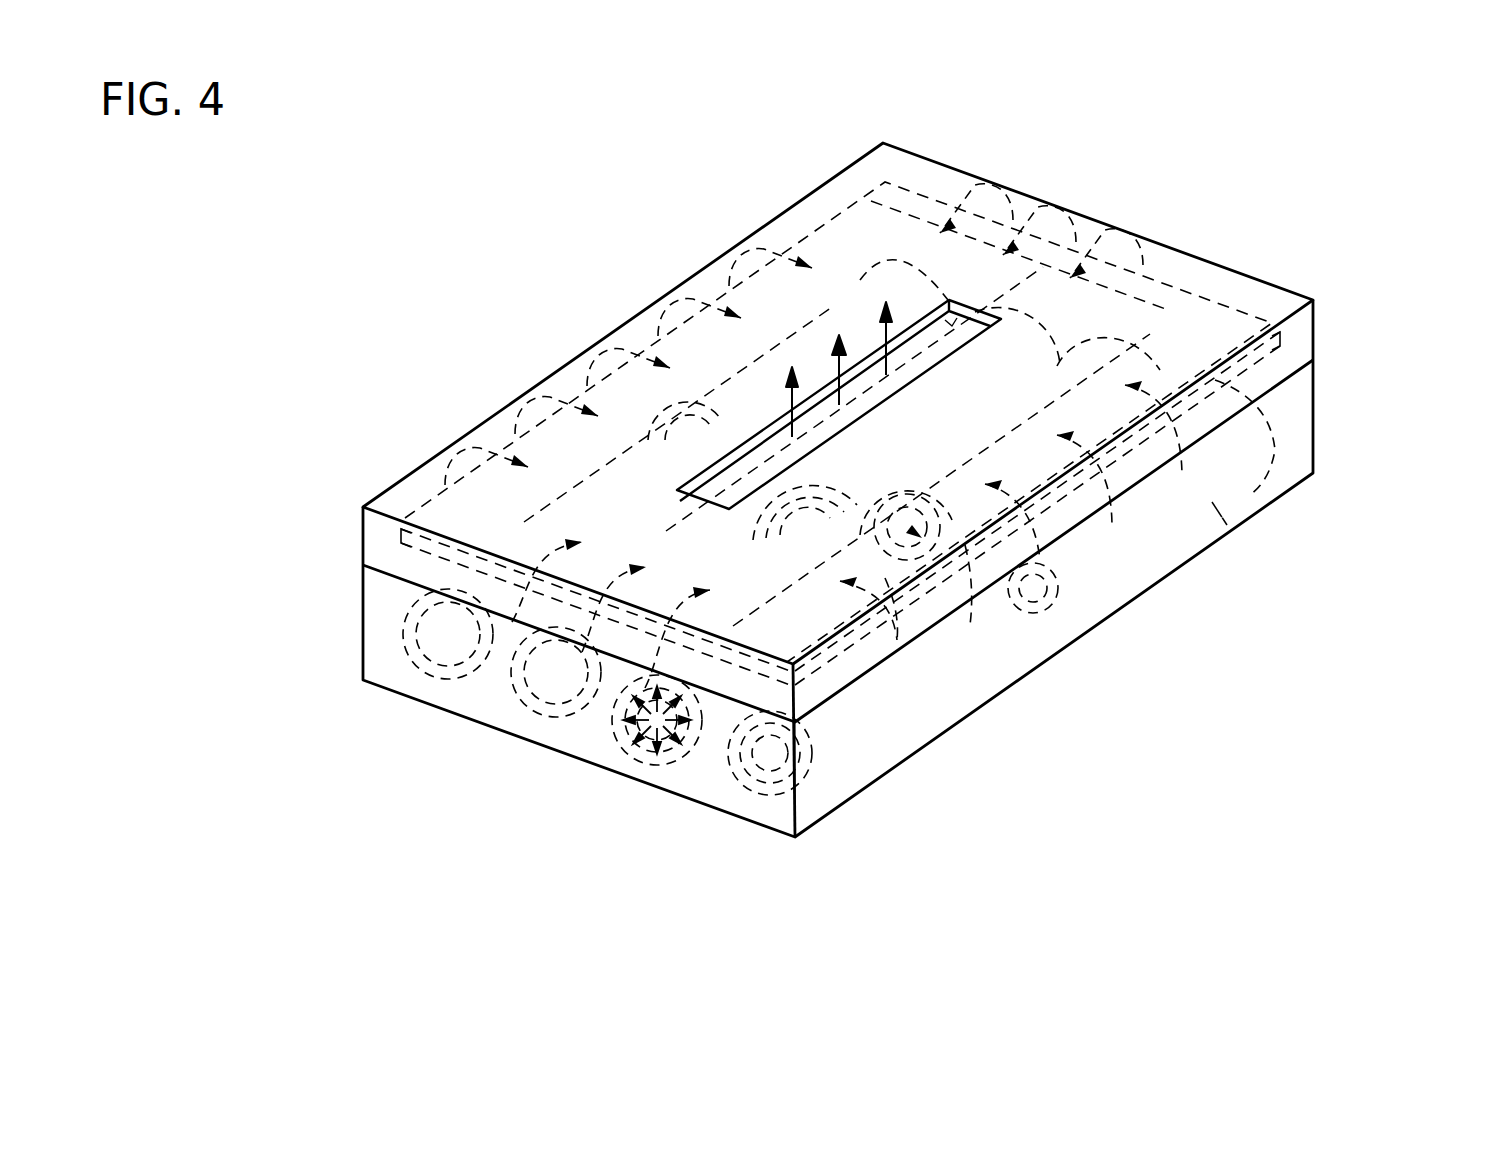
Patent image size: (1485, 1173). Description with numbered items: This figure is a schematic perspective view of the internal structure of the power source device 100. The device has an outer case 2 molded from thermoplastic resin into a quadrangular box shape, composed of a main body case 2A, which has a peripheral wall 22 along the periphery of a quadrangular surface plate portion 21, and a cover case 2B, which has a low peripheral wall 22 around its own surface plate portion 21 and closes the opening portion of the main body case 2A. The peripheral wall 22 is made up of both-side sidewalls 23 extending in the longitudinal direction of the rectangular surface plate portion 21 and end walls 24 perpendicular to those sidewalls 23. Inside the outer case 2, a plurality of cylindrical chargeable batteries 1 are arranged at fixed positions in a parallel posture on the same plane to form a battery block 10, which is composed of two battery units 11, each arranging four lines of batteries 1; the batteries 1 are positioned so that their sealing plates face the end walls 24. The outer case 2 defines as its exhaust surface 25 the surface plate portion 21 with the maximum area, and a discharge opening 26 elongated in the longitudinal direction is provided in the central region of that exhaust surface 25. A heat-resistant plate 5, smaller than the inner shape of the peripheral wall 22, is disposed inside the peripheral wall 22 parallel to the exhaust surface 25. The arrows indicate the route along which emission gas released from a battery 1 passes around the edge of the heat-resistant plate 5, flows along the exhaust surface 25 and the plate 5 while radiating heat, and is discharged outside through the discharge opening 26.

The power source device 100 is at (432, 217).
The chargeable battery 1 is at (1227, 533).
The outer case 2 is at (1417, 160).
The main body case 2A is at (1327, 420).
The cover case 2B is at (1205, 213).
The heat-resistant plate 5 is at (800, 247).
The battery block 10 is at (847, 600).
The battery unit 11 is at (1180, 533).
The surface plate portion 21 is at (860, 412).
The peripheral wall 22 is at (873, 912).
The sidewall 23 is at (847, 743).
The end wall 24 is at (573, 742).
The exhaust surface 25 is at (912, 223).
The discharge opening 26 is at (773, 417).